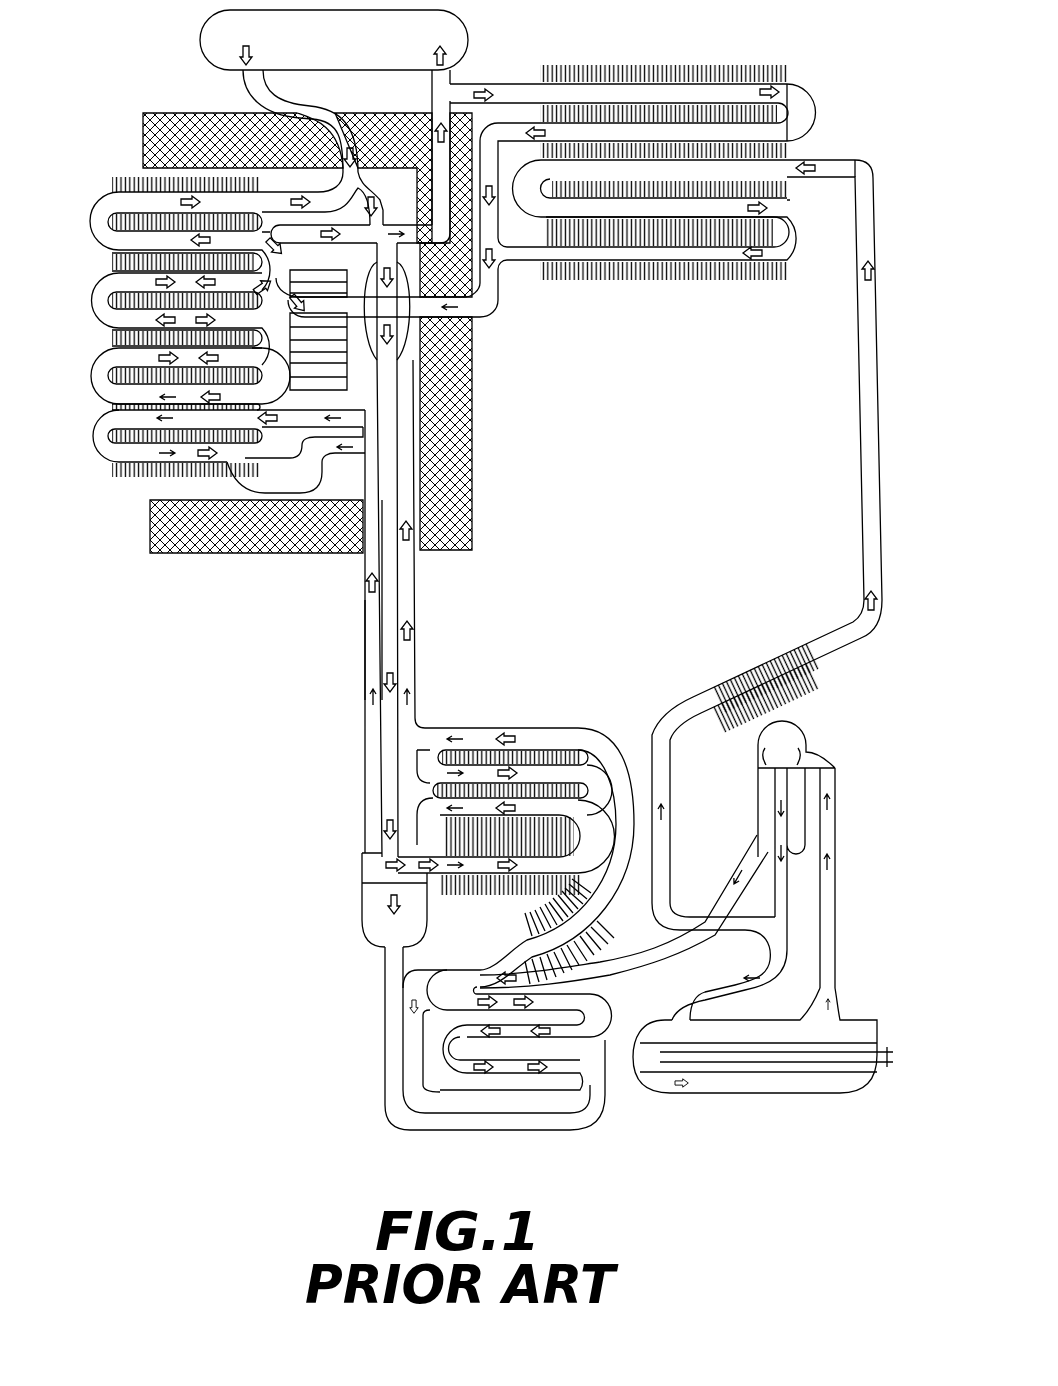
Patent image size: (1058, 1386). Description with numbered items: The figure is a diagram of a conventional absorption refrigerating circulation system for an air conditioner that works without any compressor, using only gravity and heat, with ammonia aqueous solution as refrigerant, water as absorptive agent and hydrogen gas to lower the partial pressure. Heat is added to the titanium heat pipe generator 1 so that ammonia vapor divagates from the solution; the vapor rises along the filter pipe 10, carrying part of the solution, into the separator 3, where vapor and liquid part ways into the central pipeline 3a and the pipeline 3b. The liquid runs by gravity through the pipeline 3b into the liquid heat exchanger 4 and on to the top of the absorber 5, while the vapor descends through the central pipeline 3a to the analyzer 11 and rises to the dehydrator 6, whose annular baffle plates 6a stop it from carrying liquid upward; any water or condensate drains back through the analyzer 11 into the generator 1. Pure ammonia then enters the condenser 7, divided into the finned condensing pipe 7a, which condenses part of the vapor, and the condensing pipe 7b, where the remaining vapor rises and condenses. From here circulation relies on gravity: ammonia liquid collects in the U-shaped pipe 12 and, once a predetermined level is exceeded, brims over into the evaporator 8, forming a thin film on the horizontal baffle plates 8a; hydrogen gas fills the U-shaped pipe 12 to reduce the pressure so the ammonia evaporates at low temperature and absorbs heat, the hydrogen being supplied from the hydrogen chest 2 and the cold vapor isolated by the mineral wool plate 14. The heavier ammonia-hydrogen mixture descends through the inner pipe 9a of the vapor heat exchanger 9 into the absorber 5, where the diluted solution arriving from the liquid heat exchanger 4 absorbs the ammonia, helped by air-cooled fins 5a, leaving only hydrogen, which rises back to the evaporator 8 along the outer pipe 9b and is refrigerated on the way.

The titanium heat pipe generator 1 is at (878, 1030).
The hydrogen chest 2 is at (470, 28).
The separator 3 is at (806, 735).
The central pipeline 3a is at (790, 893).
The pipeline 3b is at (757, 838).
The liquid heat exchanger 4 is at (551, 1102).
The absorber 5 is at (446, 900).
The fins 5a is at (513, 893).
The dehydrator 6 is at (718, 622).
The annular baffle plates 6a is at (514, 958).
The condenser 7 is at (669, 324).
The condensing pipe 7a is at (827, 158).
The condensing pipe 7b is at (802, 92).
The evaporator 8 is at (202, 297).
The horizontal baffle plates 8a is at (113, 180).
The vapor heat exchanger 9 is at (406, 550).
The inner pipe 9a is at (378, 652).
The outer pipe 9b is at (365, 708).
The filter pipe 10 is at (836, 842).
The analyzer 11 is at (367, 364).
The U-shaped pipe 12 is at (400, 222).
The mineral wool plate 14 is at (240, 562).